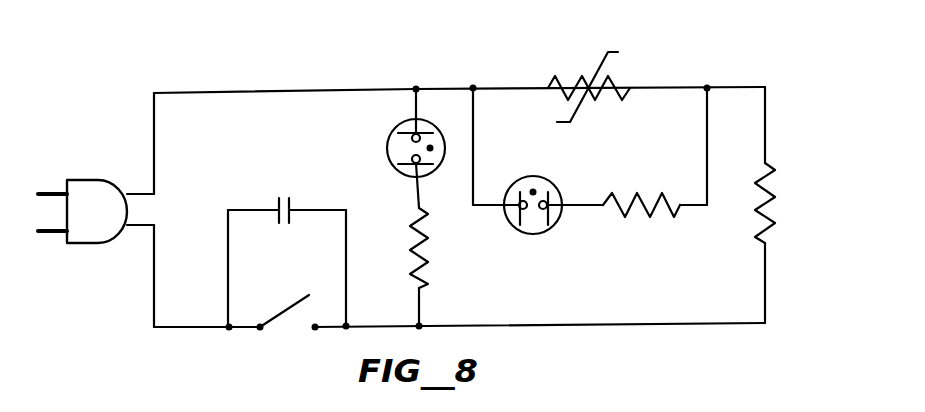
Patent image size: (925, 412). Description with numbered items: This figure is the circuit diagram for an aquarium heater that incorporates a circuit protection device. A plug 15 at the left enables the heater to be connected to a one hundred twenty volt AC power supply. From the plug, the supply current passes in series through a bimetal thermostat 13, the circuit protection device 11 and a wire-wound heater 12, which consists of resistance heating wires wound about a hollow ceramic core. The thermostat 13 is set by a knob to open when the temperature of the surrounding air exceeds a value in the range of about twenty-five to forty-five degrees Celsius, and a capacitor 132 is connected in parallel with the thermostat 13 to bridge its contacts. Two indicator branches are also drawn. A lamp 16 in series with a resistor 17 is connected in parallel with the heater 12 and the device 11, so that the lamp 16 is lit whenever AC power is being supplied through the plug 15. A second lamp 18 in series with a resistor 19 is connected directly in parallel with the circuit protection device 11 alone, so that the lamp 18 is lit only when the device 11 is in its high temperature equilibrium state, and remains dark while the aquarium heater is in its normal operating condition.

The circuit protection device 11 is at (598, 68).
The wire-wound heater 12 is at (775, 228).
The bimetal thermostat 13 is at (287, 307).
The capacitor 132 is at (275, 203).
The plug 15 is at (92, 195).
The lamp 16 is at (388, 135).
The resistor 17 is at (428, 275).
The lamp 18 is at (533, 235).
The resistor 19 is at (642, 208).